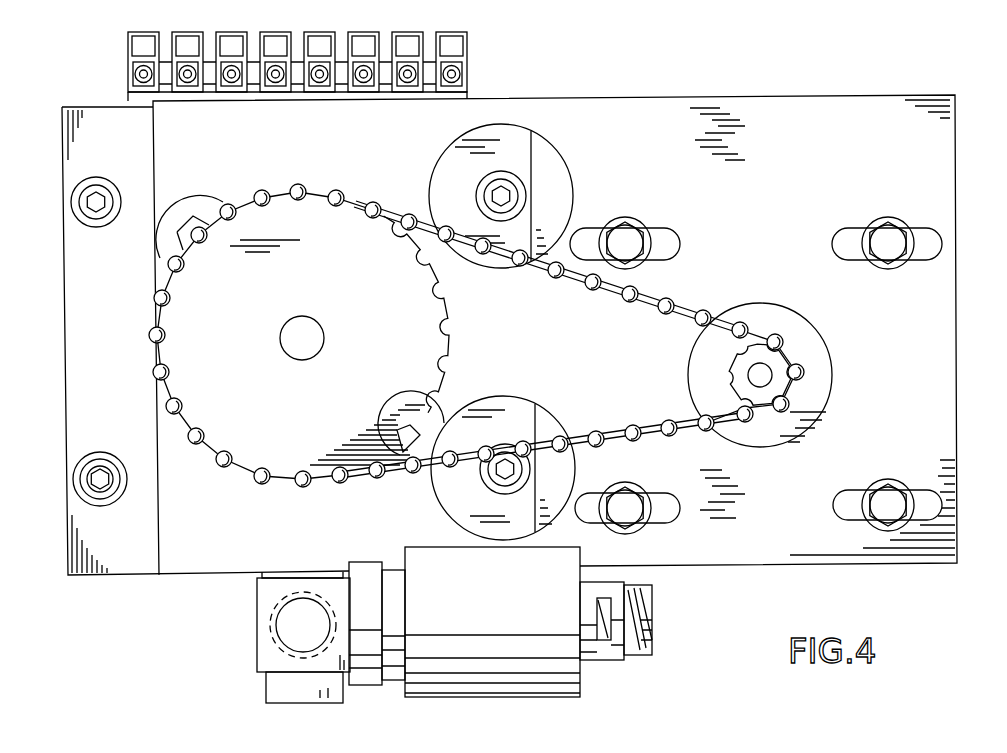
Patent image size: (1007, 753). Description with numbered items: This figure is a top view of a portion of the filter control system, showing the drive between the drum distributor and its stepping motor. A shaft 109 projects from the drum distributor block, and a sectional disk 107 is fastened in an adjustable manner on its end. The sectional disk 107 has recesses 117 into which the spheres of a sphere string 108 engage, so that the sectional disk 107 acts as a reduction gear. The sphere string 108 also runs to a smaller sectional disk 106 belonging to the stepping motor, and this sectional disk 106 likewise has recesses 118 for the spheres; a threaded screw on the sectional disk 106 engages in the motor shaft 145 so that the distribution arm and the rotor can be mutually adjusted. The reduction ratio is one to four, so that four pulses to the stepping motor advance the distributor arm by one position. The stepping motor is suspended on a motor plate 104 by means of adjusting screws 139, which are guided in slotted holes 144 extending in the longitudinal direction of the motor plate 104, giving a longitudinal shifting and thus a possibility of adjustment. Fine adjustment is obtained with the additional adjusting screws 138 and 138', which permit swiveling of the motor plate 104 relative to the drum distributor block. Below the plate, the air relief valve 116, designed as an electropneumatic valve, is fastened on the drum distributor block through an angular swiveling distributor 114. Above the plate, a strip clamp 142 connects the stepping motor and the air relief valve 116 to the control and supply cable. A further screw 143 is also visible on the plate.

The motor plate 104 is at (190, 552).
The sectional disk 106 is at (753, 375).
The sectional disk 107 is at (296, 340).
The sphere string 108 is at (674, 432).
The shaft 109 is at (292, 350).
The angular swiveling distributor 114 is at (268, 652).
The air relief valve 116 is at (505, 620).
The recesses 117 is at (445, 299).
The recesses 118 is at (740, 348).
The adjusting screw 138 is at (430, 411).
The adjusting screw 138' is at (159, 233).
The adjusting screws 139 is at (632, 236).
The strip clamp 142 is at (141, 50).
The socket head screw 143 is at (95, 480).
The slotted holes 144 is at (667, 253).
The motor shaft 145 is at (752, 380).